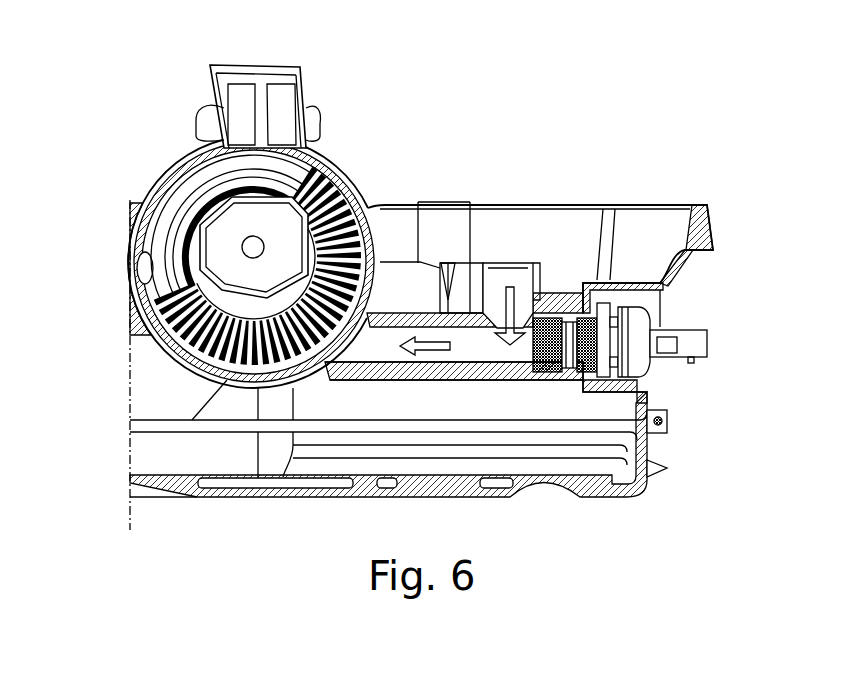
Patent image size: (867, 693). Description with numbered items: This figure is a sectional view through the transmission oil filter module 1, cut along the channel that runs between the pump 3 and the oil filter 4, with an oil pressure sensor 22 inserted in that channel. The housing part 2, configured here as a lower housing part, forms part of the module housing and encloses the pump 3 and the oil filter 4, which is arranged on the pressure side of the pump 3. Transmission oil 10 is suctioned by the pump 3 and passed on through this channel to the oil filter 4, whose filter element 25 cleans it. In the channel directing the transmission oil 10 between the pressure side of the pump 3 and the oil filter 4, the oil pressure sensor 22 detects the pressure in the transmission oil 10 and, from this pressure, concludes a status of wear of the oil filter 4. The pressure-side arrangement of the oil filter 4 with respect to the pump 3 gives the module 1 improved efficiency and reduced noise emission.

The transmission oil filter module 1 is at (596, 178).
The housing part 2 is at (603, 492).
The pump 3 is at (488, 192).
The oil filter 4 is at (217, 335).
The transmission oil 10 is at (510, 287).
The oil pressure sensor 22 is at (630, 327).
The filter element 25 is at (235, 378).